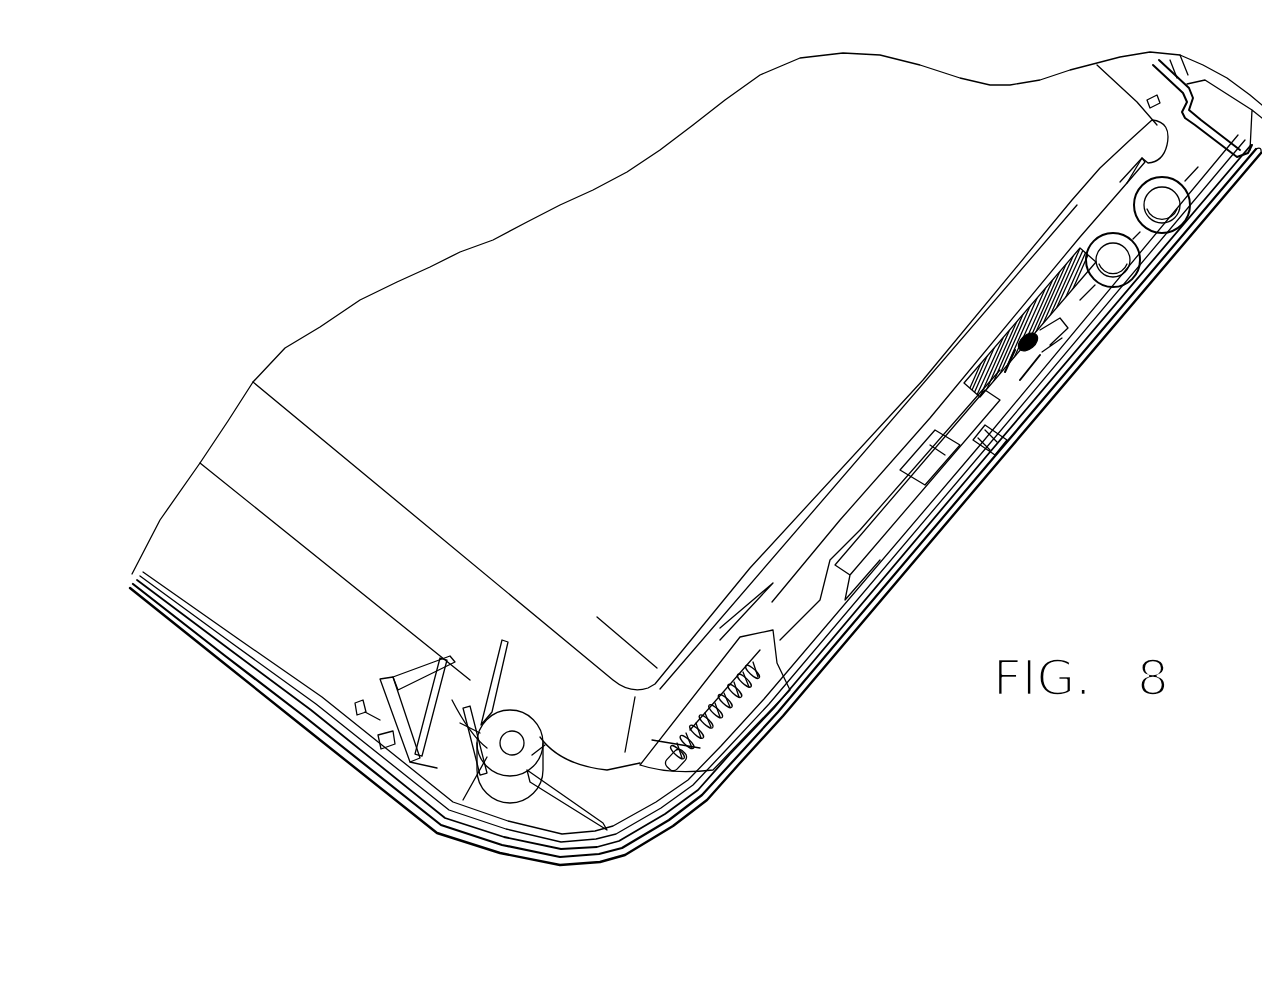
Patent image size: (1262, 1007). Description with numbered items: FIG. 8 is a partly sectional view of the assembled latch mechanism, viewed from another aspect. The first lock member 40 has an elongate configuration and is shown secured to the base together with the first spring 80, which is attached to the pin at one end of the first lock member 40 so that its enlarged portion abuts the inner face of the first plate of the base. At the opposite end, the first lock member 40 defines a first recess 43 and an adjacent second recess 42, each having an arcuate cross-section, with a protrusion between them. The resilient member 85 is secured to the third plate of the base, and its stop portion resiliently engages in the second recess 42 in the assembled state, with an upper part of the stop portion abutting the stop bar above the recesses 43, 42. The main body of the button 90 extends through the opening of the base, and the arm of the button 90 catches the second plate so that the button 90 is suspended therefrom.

The first lock member 40 is at (865, 505).
The second recess 42 is at (1057, 298).
The first recess 43 is at (1045, 343).
The first spring 80 is at (755, 707).
The resilient member 85 is at (1030, 347).
The button 90 is at (925, 497).